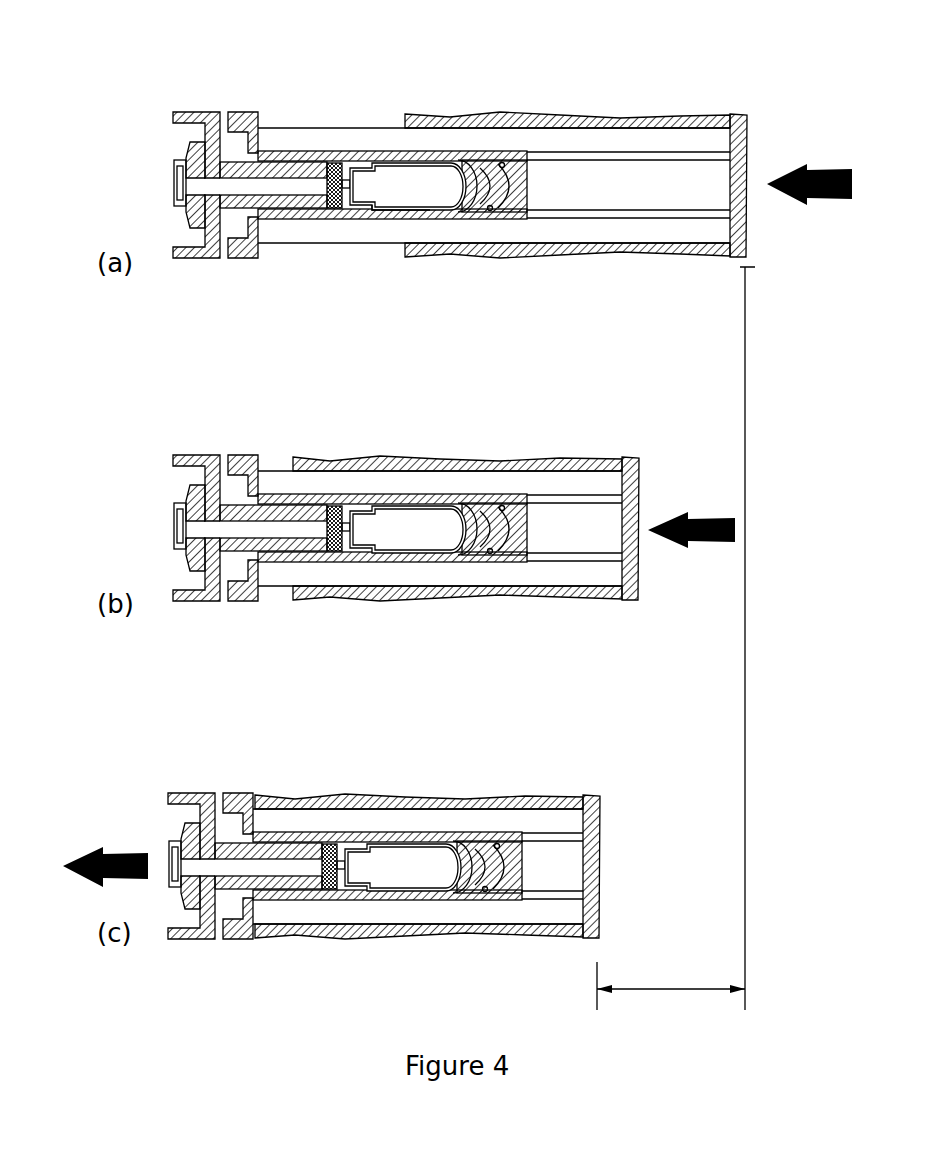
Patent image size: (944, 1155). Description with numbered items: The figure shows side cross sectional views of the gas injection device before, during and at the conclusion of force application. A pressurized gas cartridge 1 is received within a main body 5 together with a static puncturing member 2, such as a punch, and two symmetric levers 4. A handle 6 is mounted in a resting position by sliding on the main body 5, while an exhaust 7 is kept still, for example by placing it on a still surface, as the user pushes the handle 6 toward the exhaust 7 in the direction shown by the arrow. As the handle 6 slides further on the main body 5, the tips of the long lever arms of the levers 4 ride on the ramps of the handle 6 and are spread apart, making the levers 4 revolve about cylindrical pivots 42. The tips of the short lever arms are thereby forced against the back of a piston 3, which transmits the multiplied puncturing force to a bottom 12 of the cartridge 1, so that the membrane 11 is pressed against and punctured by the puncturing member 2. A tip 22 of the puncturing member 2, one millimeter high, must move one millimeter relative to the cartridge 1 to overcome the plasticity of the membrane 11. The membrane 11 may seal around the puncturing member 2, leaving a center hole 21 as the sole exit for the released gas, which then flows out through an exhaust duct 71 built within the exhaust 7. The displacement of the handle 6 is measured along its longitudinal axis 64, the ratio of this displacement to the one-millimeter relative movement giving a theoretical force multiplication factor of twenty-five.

In FIG. 4a, the gas cartridge 1 is at (393, 212).
In FIG. 4b, the gas cartridge 1 is at (407, 548).
In FIG. 4c, the gas cartridge 1 is at (397, 876).
In FIG. 4a, the puncturing member 2 is at (334, 209).
In FIG. 4c, the center hole 21 is at (324, 893).
In FIG. 4b, the tip of the puncturing member 22 is at (368, 497).
In FIG. 4a, the piston 3 is at (462, 215).
In FIG. 4b, the piston 3 is at (470, 557).
In FIG. 4c, the piston 3 is at (453, 893).
In FIG. 4a, the lever 4 is at (500, 151).
In FIG. 4b, the lever 4 is at (500, 494).
In FIG. 4c, the lever 4 is at (493, 833).
In FIG. 4a, the cylindrical pivot 42 is at (521, 155).
In FIG. 4a, the main body 5 is at (240, 112).
In FIG. 4b, the main body 5 is at (233, 455).
In FIG. 4c, the main body 5 is at (228, 793).
In FIG. 4a, the handle 6 is at (638, 116).
In FIG. 4b, the handle 6 is at (592, 458).
In FIG. 4c, the handle 6 is at (567, 800).
In FIG. 4a, the exhaust 7 is at (210, 112).
In FIG. 4b, the exhaust 7 is at (208, 455).
In FIG. 4c, the exhaust 7 is at (205, 793).
In FIG. 4a, the exhaust duct 71 is at (174, 185).
In FIG. 4c, the exhaust duct 71 is at (205, 866).
In FIG. 4a, the membrane 11 is at (378, 151).
In FIG. 4b, the membrane 11 is at (440, 528).
In FIG. 4c, the membrane 11 is at (362, 833).
In FIG. 4a, the bottom of the cartridge 12 is at (436, 210).
In FIG. 4c, the longitudinal axis 64 is at (597, 990).